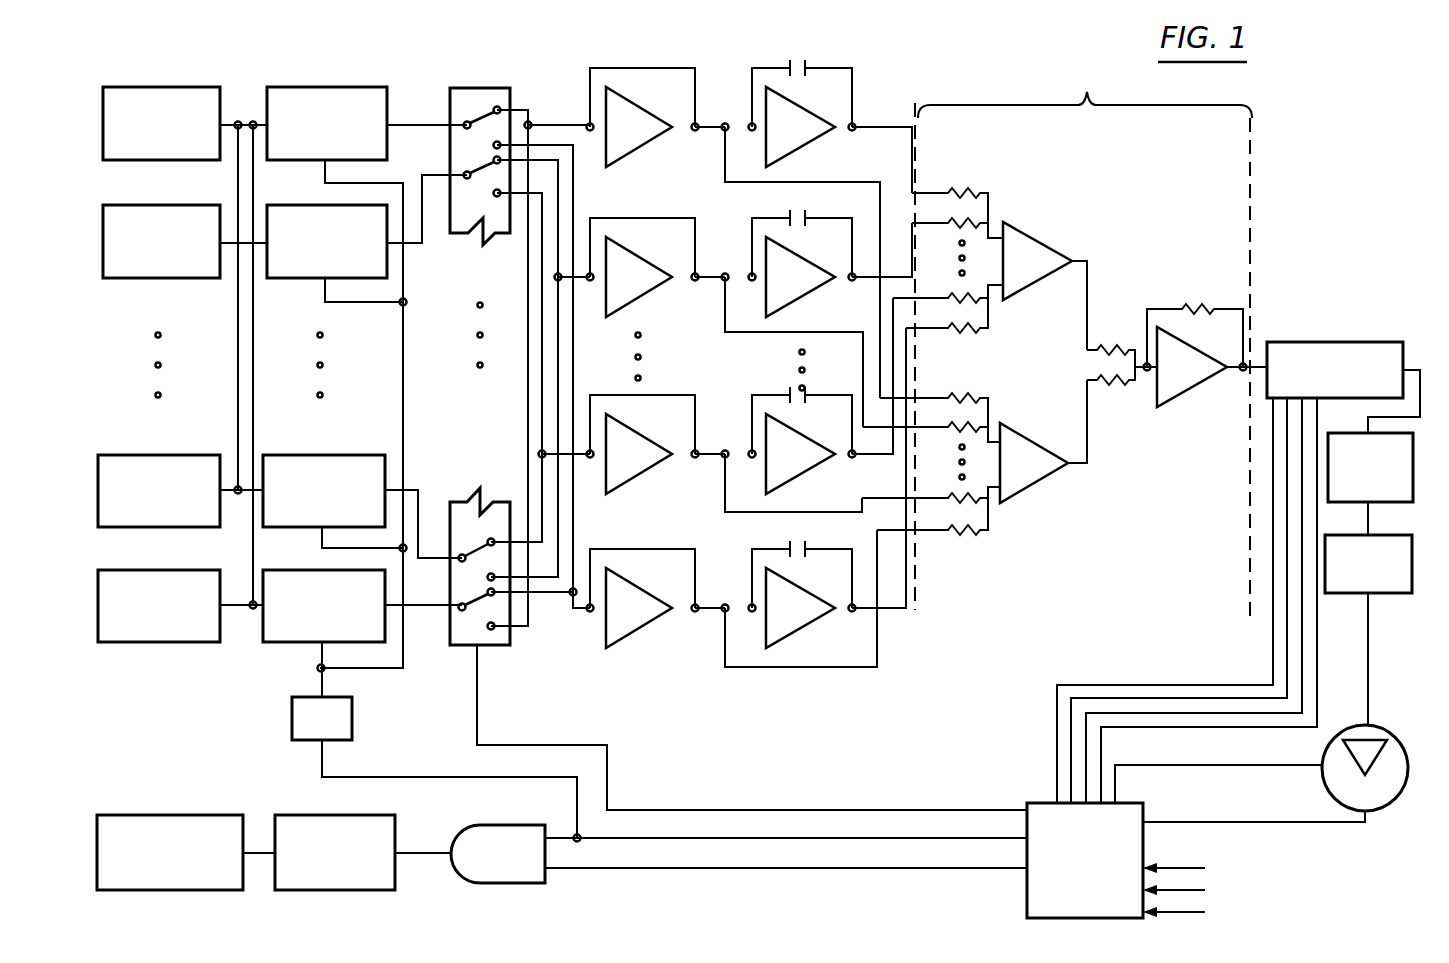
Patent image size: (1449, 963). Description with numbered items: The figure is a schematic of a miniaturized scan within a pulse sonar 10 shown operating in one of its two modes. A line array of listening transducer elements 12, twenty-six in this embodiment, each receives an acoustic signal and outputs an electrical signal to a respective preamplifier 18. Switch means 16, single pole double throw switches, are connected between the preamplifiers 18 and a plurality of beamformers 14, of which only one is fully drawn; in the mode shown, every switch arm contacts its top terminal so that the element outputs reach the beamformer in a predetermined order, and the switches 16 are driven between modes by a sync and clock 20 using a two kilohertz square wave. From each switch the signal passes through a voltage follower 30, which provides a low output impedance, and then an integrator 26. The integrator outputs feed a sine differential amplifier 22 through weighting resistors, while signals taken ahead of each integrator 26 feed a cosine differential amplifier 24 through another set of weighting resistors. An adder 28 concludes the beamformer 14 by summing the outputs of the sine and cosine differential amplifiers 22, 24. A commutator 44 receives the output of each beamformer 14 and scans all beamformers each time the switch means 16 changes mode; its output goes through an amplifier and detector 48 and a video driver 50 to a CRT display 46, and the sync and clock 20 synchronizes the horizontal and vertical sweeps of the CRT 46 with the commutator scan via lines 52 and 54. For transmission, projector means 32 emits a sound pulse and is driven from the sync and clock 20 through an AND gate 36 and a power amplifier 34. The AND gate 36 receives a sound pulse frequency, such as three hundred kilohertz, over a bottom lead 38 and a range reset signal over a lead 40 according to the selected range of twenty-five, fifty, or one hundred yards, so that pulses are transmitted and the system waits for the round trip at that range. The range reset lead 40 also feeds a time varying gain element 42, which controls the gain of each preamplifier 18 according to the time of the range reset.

The miniaturized scan within a pulse sonar 10 is at (256, 66).
The listening transducer element 12 is at (130, 87).
The beamformer 14 is at (1057, 344).
The switch means 16 is at (480, 115).
The preamplifier 18 is at (391, 87).
The sync and clock 20 is at (1046, 803).
The sine differential amplifier 22 is at (1017, 272).
The cosine differential amplifier 24 is at (1010, 474).
The integrator 26 is at (830, 113).
The adder 28 is at (1172, 378).
The voltage follower 30 is at (668, 113).
The projector means 32 is at (235, 815).
The power amplifier 34 is at (385, 815).
The AND gate 36 is at (545, 825).
The bottom lead 38 is at (687, 870).
The range reset lead 40 is at (478, 777).
The time varying gain element 42 is at (352, 717).
The commutator 44 is at (1392, 342).
The CRT display 46 is at (1395, 739).
The amplifier and detector 48 is at (1414, 447).
The video driver 50 is at (1413, 548).
The sweep line 52 is at (1245, 765).
The sweep line 54 is at (1260, 822).